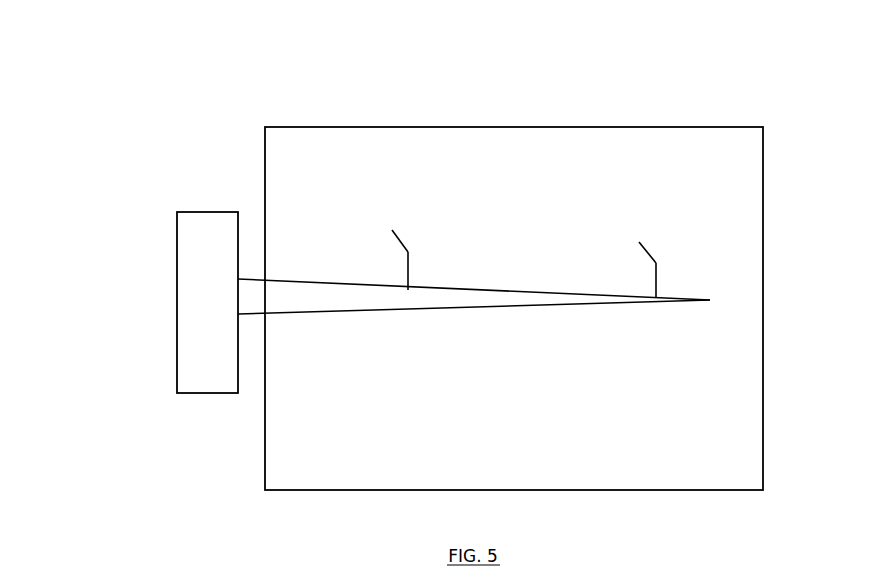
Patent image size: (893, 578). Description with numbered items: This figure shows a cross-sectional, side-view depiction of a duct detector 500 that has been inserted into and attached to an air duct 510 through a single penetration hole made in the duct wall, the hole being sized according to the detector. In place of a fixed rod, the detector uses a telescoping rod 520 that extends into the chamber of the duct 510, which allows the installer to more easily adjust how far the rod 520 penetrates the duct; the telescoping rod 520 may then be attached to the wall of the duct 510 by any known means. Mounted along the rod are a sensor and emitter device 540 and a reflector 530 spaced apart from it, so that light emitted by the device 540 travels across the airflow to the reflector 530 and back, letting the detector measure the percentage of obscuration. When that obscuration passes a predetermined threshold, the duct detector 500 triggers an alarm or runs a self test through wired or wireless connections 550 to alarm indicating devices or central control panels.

The duct detector 500 is at (466, 168).
The air duct 510 is at (632, 130).
The telescoping rod 520 is at (457, 299).
The reflector 530 is at (651, 253).
The sensor and emitter device 540 is at (405, 265).
The wired or wireless connections 550 is at (174, 254).